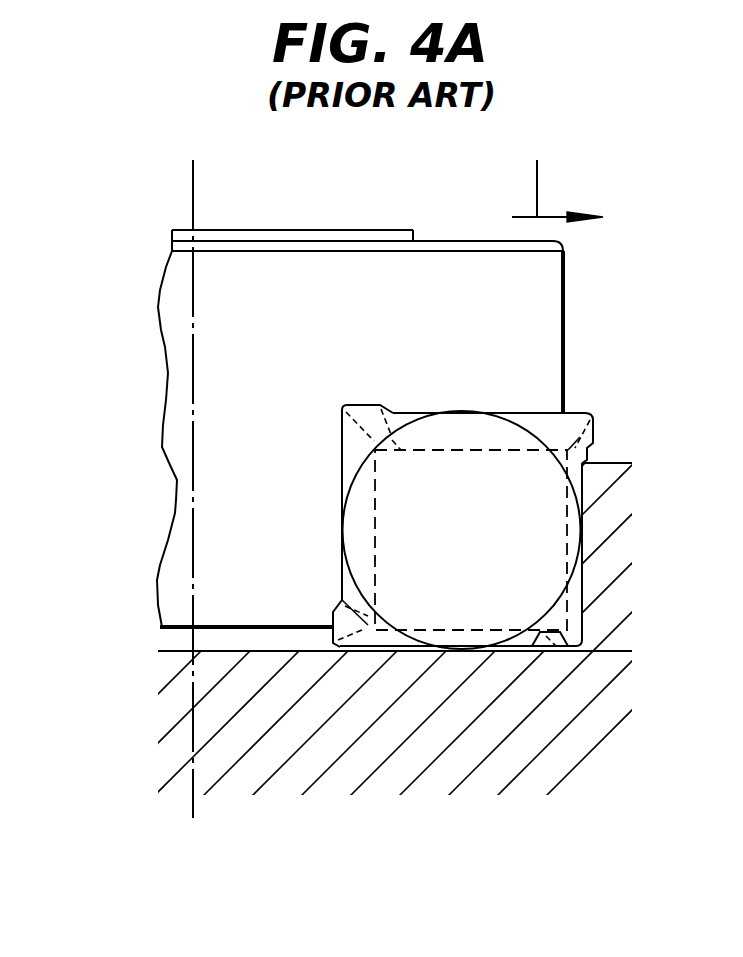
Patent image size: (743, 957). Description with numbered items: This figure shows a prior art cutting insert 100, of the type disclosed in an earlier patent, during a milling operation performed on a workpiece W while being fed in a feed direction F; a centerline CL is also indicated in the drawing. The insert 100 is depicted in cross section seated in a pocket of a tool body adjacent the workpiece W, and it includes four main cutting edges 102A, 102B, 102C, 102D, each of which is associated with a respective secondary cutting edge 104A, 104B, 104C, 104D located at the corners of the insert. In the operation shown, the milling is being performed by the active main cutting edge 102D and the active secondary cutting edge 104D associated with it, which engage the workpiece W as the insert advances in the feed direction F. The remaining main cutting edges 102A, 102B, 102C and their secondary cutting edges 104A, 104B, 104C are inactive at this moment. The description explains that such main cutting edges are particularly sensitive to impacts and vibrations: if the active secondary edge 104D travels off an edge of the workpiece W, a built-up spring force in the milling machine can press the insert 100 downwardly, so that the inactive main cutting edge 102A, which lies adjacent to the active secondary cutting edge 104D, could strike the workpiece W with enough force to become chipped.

The cutting insert 100 is at (502, 552).
The main cutting edge 102A is at (508, 652).
The main cutting edge 102B is at (342, 558).
The main cutting edge 102C is at (477, 413).
The main cutting edge 102D is at (585, 565).
The secondary cutting edge 104A is at (334, 647).
The secondary cutting edge 104B is at (360, 402).
The secondary cutting edge 104C is at (597, 423).
The secondary cutting edge 104D is at (558, 653).
The workpiece W is at (601, 478).
The feed direction F is at (557, 178).
The centerline CL is at (193, 196).